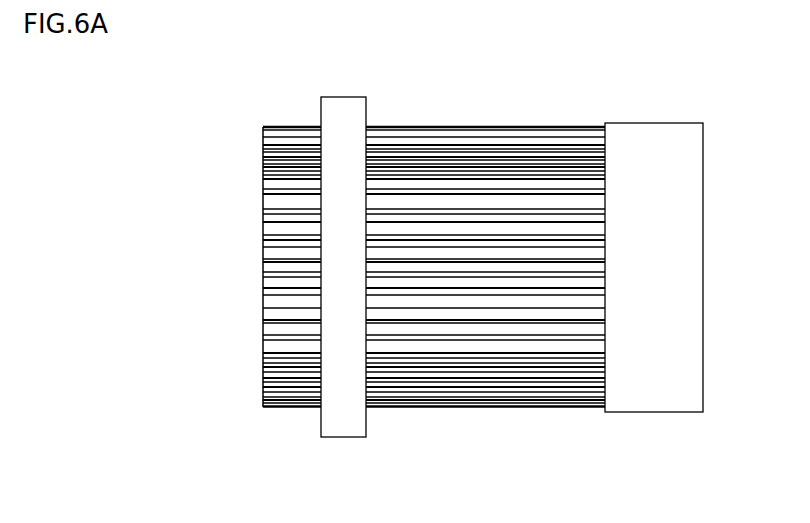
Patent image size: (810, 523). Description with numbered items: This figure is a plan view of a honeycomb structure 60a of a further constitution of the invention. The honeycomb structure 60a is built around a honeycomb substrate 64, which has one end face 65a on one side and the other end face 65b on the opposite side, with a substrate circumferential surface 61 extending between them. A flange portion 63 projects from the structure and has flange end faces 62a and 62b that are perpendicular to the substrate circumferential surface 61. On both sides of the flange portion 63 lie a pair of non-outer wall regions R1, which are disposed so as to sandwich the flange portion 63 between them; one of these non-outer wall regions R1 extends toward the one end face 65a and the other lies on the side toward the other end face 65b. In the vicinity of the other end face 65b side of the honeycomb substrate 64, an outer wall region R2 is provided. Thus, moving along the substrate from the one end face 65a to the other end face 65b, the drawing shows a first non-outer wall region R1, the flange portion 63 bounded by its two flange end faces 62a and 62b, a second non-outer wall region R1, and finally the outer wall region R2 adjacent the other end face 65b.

The honeycomb structure 60a is at (207, 155).
The substrate circumferential surface 61 is at (453, 125).
The flange end face 62a is at (321, 120).
The flange end face 62b is at (366, 108).
The flange portion 63 is at (343, 112).
The honeycomb substrate 64 is at (640, 392).
The one end face 65a is at (263, 263).
The other end face 65b is at (703, 258).
The non-outer wall region R1 is at (297, 438).
The outer wall region R2 is at (637, 430).